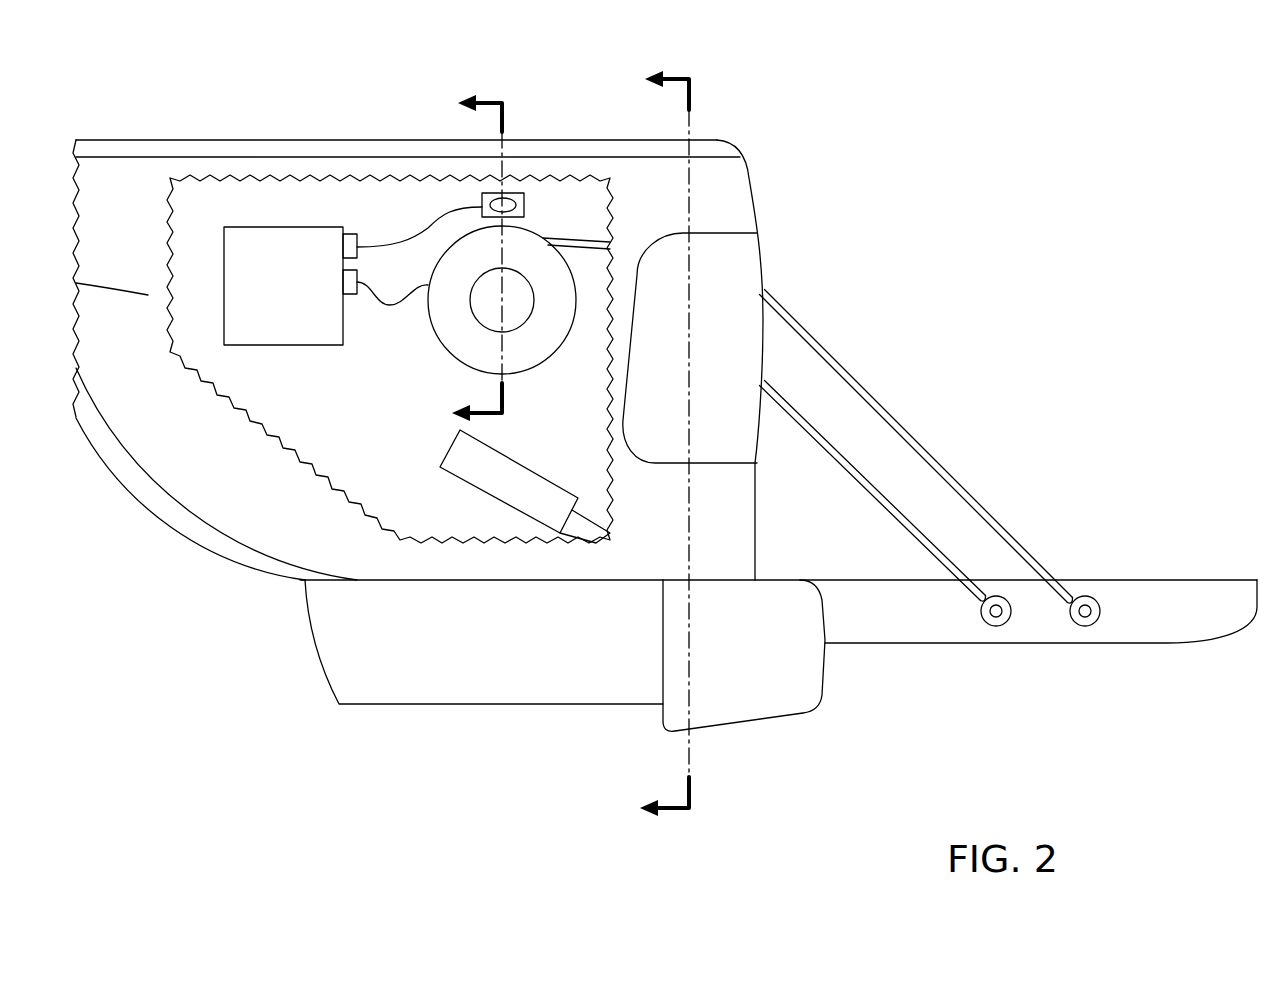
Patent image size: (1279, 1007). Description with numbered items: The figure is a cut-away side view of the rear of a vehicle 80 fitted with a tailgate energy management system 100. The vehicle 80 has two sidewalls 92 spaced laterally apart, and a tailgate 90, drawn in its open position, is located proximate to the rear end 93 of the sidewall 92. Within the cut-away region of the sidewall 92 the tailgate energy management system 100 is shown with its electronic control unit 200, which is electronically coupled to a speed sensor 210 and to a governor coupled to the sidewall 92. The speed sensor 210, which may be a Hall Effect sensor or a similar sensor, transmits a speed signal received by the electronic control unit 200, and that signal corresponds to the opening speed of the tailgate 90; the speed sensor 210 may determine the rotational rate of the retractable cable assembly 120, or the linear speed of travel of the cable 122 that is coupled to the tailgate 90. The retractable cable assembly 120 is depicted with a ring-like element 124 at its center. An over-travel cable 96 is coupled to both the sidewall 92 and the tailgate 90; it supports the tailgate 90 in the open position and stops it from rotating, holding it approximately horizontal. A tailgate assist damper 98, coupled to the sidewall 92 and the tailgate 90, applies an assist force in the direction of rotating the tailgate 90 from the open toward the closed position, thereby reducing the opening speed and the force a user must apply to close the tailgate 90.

The vehicle 80 is at (665, 444).
The tailgate 90 is at (1220, 636).
The sidewall 92 is at (262, 140).
The rear end 93 is at (728, 140).
The over-travel cable 96 is at (880, 497).
The tailgate assist damper 98 is at (458, 478).
The tailgate energy management system 100 is at (197, 178).
The retractable cable assembly 120 is at (519, 347).
The cable 122 is at (896, 419).
The sensor ring 124 is at (545, 363).
The electronic control unit 200 is at (326, 347).
The speed sensor 210 is at (524, 206).